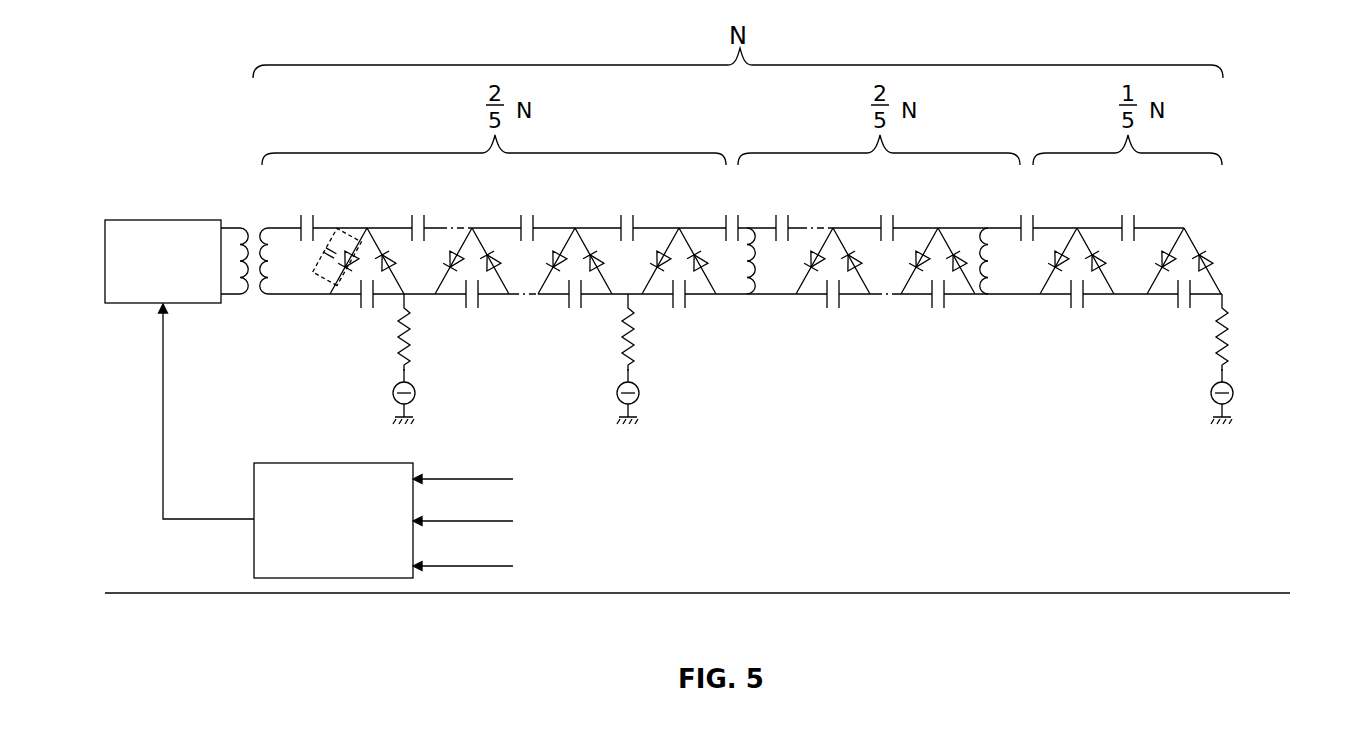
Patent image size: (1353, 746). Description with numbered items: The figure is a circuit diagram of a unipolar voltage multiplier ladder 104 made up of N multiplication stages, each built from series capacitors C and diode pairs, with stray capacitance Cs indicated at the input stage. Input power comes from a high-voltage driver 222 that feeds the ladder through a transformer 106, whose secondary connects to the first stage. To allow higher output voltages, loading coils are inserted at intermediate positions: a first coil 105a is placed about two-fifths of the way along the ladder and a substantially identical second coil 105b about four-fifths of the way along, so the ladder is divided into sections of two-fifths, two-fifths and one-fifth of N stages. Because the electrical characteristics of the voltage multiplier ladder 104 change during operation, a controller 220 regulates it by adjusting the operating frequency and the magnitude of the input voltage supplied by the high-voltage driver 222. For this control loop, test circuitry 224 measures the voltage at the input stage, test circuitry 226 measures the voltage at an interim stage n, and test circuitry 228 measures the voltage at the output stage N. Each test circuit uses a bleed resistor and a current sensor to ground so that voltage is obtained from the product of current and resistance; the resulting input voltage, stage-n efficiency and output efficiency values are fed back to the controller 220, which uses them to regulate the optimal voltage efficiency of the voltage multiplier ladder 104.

The voltage multiplier ladder 104 is at (797, 229).
The first coil 105a is at (749, 228).
The second coil 105b is at (990, 228).
The transformer 106 is at (249, 218).
The controller 220 is at (316, 463).
The high-voltage driver 222 is at (172, 220).
The test circuitry 224 is at (455, 305).
The test circuitry 226 is at (690, 305).
The test circuitry 228 is at (1272, 305).